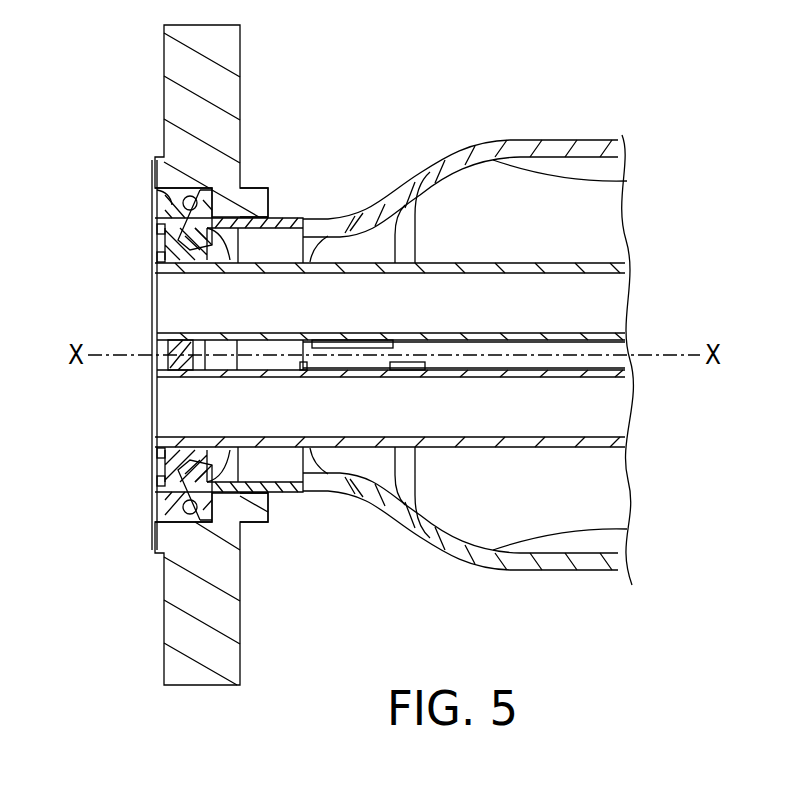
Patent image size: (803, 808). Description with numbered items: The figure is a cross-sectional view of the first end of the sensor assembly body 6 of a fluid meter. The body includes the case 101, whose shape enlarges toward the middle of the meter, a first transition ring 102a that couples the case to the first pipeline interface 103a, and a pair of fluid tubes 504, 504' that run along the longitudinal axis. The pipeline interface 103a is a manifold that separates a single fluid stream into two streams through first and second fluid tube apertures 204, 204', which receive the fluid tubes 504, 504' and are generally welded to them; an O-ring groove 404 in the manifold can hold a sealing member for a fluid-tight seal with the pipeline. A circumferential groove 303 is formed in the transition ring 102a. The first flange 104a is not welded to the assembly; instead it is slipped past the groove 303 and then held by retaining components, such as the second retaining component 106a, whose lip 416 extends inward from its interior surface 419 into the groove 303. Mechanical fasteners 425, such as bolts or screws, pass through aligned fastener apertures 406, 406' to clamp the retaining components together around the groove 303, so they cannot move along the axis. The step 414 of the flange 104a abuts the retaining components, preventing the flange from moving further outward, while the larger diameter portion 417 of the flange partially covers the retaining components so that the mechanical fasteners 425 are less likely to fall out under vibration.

The first flange 104a is at (240, 30).
The case 101 is at (507, 140).
The first transition ring 102a is at (304, 202).
The step 414 is at (268, 198).
The lip 416 is at (245, 504).
The fluid tube 504 is at (390, 355).
The fluid tube 504' is at (391, 379).
The larger diameter portion 417 is at (158, 163).
The fastener aperture 406' is at (232, 174).
The mechanical fastener 425 is at (183, 203).
The second retaining component 106a is at (157, 190).
The first pipeline interface 103a is at (157, 230).
The first fluid tube aperture 204 is at (121, 267).
The circumferential groove 303 is at (212, 250).
The interior surface 419 is at (152, 488).
The fastener aperture 406 is at (153, 515).
The second fluid tube aperture 204' is at (117, 449).
The O-ring groove 404 is at (152, 474).
The sensor assembly body 6 is at (333, 575).